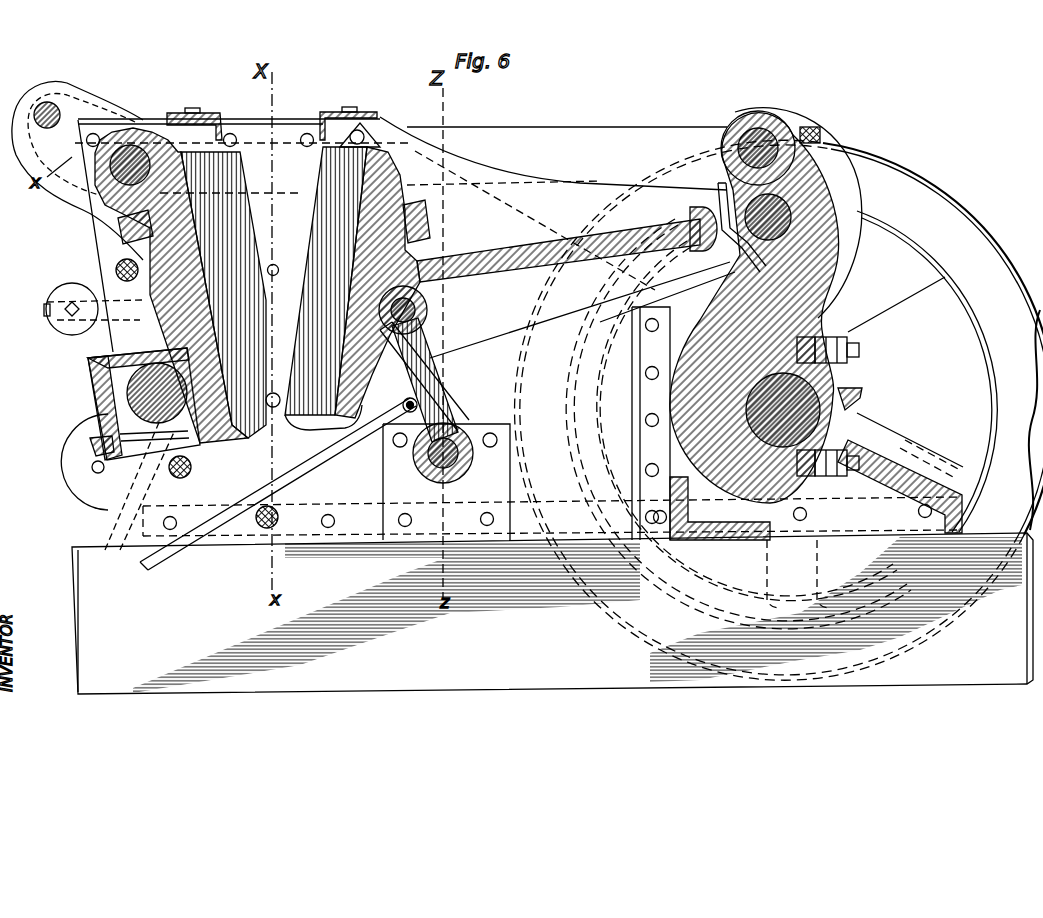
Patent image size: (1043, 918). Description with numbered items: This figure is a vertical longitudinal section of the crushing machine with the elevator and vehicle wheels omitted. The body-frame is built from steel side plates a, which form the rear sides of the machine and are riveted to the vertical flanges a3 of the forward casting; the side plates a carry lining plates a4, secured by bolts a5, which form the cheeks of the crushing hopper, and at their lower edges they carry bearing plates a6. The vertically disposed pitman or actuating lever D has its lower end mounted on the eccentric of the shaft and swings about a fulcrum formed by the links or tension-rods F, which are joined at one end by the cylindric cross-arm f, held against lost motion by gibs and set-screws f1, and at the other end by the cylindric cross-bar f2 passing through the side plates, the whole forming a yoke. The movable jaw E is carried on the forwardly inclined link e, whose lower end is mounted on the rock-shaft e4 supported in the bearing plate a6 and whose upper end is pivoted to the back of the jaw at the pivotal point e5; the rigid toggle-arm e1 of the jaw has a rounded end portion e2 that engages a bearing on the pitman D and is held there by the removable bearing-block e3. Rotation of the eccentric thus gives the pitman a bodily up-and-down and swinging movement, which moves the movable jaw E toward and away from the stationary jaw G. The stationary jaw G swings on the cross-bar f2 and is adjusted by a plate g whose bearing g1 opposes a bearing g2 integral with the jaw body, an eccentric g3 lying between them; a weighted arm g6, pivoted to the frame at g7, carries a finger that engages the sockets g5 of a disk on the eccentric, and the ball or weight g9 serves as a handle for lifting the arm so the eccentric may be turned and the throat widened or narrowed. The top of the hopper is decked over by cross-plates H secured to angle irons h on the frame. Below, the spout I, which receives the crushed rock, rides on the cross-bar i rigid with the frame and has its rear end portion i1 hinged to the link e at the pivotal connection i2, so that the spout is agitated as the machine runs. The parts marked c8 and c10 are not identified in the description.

The pivot pin c8 is at (50, 104).
The lever arm c10 is at (78, 100).
The cylindric cross-bar f2 is at (135, 148).
The cross-plates H is at (203, 112).
The stationary jaw G is at (207, 220).
The angle irons h is at (284, 147).
The movable jaw E is at (357, 207).
The links or tension-rods F is at (500, 133).
The toggle-arm e1 is at (570, 193).
The removable plate or bearing-block e3 is at (715, 240).
The cylindric cross-arm f is at (752, 120).
The vertical flanges a3 is at (760, 123).
The rounded end portion e2 is at (777, 193).
The gibs and set-screws f1 is at (812, 130).
The lining plates a4 is at (815, 200).
The steel side plates a is at (637, 306).
The pitman or actuating lever D is at (780, 285).
The bearing plates a6 is at (497, 475).
The bolts a5 is at (747, 403).
The weighted arm g6 is at (100, 300).
The ball or weight g9 is at (68, 295).
The eccentric g3 is at (113, 360).
The plate g is at (100, 385).
The bearing g1 is at (100, 408).
The radially extending sockets or openings g5 is at (140, 470).
The spout I is at (220, 497).
The cross-bar i is at (260, 527).
The rear end portion i1 is at (380, 440).
The pivotal point of connection i2 is at (403, 403).
The pivotal point e5 is at (437, 250).
The link e is at (425, 370).
The rock-shaft e4 is at (460, 427).
The pivot g7 is at (205, 305).
The bearing g2 is at (200, 365).